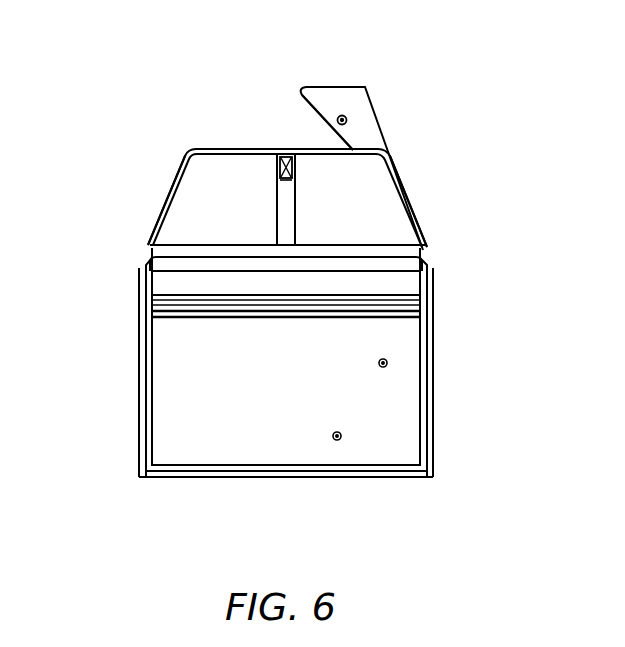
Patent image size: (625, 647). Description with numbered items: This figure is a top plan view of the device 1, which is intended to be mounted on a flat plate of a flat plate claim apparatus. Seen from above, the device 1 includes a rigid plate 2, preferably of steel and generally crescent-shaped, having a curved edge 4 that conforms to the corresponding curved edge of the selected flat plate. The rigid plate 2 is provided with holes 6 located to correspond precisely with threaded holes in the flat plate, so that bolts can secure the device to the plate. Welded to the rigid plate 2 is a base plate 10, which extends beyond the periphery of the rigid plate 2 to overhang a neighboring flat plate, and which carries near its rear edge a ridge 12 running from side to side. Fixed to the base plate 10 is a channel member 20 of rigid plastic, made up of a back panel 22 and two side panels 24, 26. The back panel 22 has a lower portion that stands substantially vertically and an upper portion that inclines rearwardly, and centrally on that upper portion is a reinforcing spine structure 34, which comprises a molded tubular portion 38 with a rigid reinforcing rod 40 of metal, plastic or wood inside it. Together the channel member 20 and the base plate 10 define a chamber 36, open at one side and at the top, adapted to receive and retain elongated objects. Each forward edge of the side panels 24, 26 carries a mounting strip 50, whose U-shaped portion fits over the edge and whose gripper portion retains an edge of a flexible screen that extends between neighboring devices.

The device 1 is at (503, 278).
The rigid plate 2 is at (363, 93).
The curved edge 4 is at (320, 113).
The holes 6 is at (341, 115).
The base plate 10 is at (279, 401).
The ridge 12 is at (293, 320).
The channel member 20 is at (200, 147).
The back panel 22 is at (253, 153).
The side panel 24 is at (163, 210).
The side panel 26 is at (425, 242).
The reinforcing spine structure 34 is at (297, 235).
The chamber 36 is at (245, 428).
The molded tubular portion 38 is at (297, 190).
The rigid reinforcing rod 40 is at (277, 170).
The mounting strip 50 is at (138, 352).